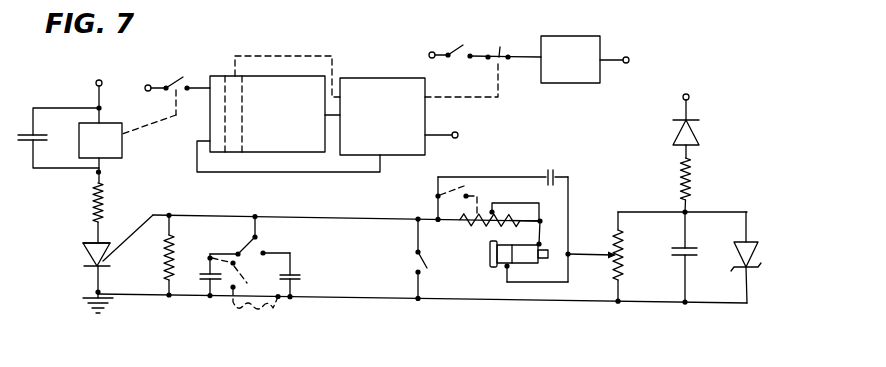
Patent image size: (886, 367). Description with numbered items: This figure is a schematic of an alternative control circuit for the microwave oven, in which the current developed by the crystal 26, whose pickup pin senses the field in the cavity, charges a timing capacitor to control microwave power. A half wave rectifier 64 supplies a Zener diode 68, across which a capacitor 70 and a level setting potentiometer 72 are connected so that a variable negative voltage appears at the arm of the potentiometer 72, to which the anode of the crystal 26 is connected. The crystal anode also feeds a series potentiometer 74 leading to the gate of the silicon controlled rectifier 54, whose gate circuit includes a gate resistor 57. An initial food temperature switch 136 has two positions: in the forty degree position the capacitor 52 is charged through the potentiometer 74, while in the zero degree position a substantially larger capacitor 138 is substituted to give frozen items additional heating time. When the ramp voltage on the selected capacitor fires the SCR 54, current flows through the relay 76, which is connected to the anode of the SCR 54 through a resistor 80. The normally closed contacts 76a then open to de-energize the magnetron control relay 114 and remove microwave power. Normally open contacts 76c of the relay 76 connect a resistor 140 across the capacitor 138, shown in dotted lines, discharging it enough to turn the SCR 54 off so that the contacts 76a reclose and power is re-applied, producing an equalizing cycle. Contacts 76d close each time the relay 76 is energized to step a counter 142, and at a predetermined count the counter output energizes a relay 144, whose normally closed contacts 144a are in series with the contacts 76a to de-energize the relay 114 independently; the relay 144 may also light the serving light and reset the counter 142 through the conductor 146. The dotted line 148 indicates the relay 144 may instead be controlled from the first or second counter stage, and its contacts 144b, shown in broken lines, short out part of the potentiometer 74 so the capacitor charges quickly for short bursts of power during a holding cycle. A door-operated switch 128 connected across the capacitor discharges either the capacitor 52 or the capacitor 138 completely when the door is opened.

The crystal 26 is at (501, 266).
The capacitor 52 is at (300, 268).
The silicon controlled rectifier 54 is at (83, 250).
The gate resistor 57 is at (163, 258).
The half wave rectifier 64 is at (699, 139).
The Zener diode 68 is at (755, 246).
The capacitor 70 is at (688, 245).
The level setting potentiometer 72 is at (632, 262).
The series potentiometer 74 is at (482, 225).
The relay 76 is at (122, 150).
The normally closed contacts 76a is at (485, 42).
The normally open contacts 76c is at (231, 268).
The contacts 76d is at (166, 94).
The resistor 80 is at (93, 196).
The magnetron control relay 114 is at (598, 51).
The switch 128 is at (417, 259).
The initial food temperature switch 136 is at (270, 263).
The capacitor 138 is at (203, 290).
The resistor 140 is at (282, 314).
The counter 142 is at (210, 119).
The relay 144 is at (394, 76).
The normally closed contacts 144a is at (500, 47).
The relay contacts 144b is at (437, 214).
The conductor 146 is at (272, 172).
The dotted line 148 is at (265, 52).